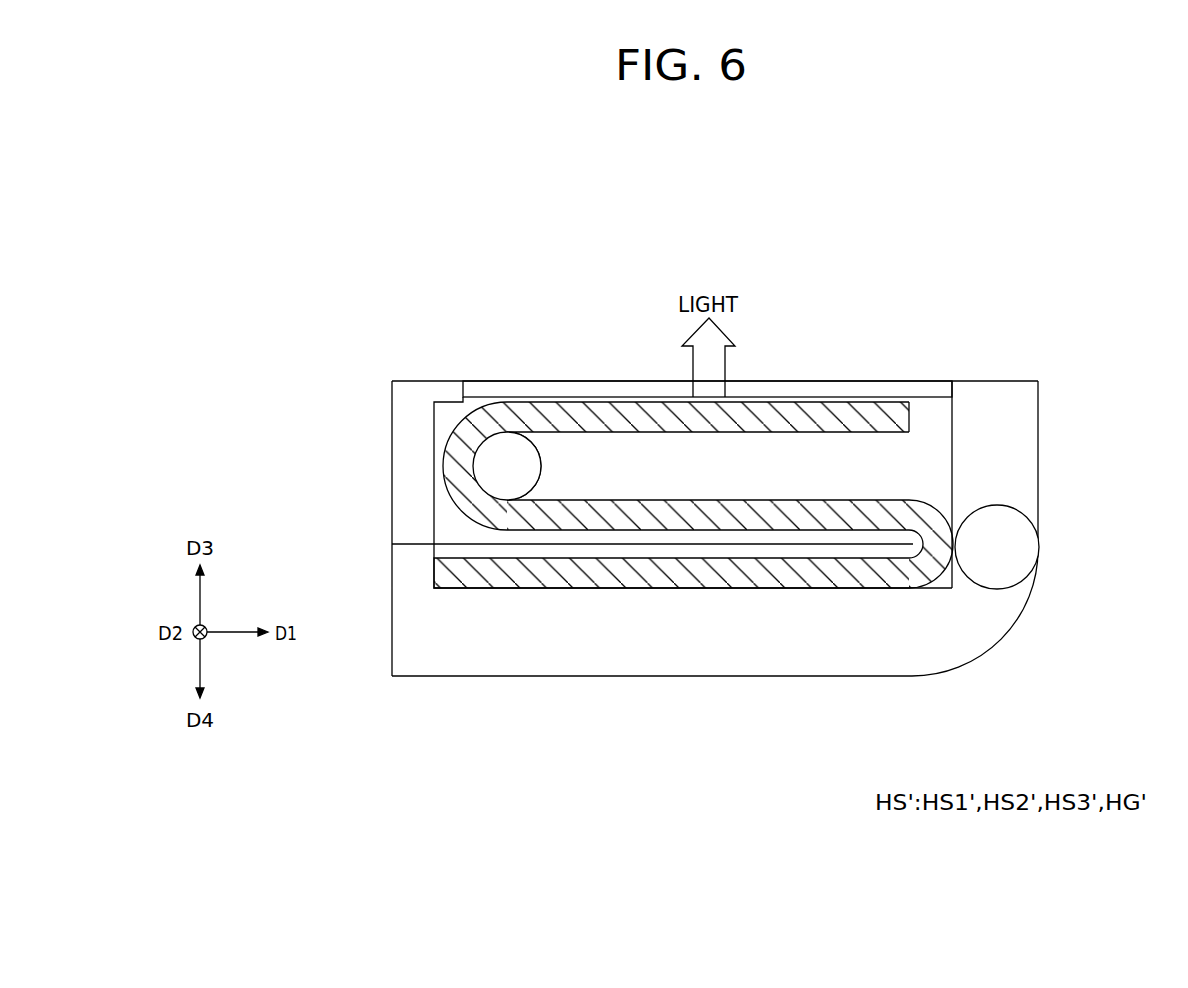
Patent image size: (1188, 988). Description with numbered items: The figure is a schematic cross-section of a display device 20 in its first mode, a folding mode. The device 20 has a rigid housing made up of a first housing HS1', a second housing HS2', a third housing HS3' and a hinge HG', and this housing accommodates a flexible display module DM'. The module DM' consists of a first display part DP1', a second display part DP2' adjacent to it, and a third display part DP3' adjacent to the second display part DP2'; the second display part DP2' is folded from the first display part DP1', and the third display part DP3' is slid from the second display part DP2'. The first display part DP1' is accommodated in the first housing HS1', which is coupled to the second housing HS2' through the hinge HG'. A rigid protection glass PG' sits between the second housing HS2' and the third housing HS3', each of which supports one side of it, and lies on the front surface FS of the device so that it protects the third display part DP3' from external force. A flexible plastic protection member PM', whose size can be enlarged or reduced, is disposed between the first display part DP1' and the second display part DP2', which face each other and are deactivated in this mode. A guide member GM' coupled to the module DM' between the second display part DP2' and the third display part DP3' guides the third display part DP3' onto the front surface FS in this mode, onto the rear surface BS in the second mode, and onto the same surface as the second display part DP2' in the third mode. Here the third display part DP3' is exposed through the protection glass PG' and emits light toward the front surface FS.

The display device 20 is at (718, 256).
The front surface FS is at (998, 288).
The rear surface BS is at (998, 720).
The first housing HS1' is at (715, 643).
The second housing HS2' is at (995, 454).
The third housing HS3' is at (427, 431).
The hinge HG' is at (1032, 547).
The protection glass PG' is at (707, 357).
The guide member GM' is at (429, 466).
The protection member PM' is at (652, 643).
The flexible display module DM' is at (693, 592).
The first display part DP1' is at (671, 650).
The second display part DP2' is at (730, 621).
The third display part DP3' is at (676, 572).